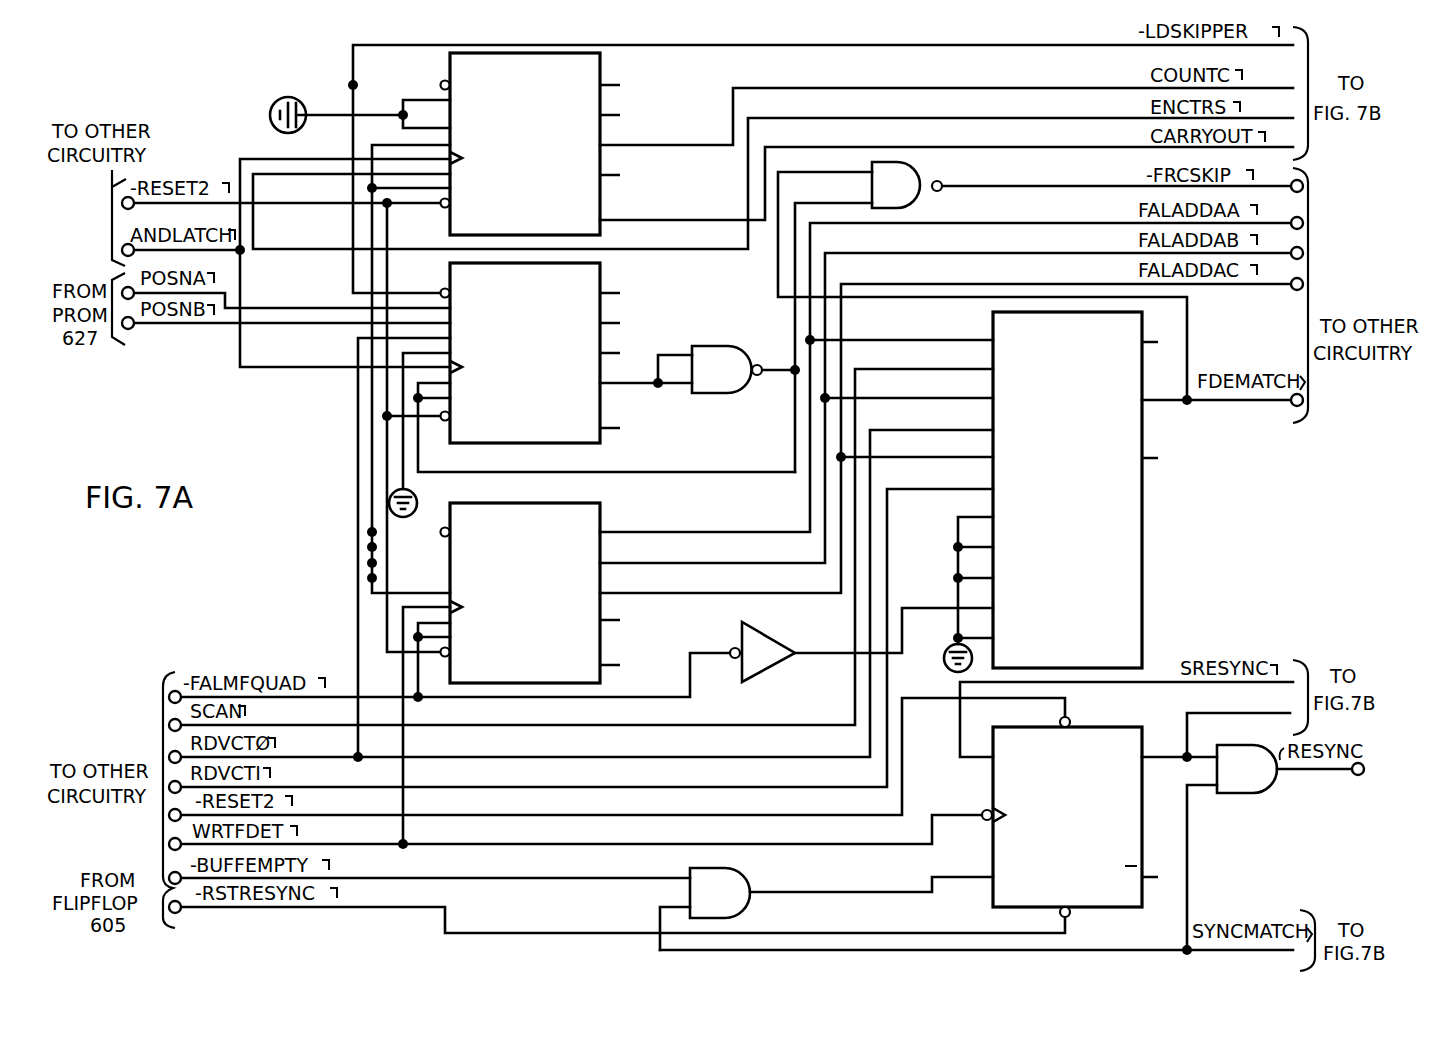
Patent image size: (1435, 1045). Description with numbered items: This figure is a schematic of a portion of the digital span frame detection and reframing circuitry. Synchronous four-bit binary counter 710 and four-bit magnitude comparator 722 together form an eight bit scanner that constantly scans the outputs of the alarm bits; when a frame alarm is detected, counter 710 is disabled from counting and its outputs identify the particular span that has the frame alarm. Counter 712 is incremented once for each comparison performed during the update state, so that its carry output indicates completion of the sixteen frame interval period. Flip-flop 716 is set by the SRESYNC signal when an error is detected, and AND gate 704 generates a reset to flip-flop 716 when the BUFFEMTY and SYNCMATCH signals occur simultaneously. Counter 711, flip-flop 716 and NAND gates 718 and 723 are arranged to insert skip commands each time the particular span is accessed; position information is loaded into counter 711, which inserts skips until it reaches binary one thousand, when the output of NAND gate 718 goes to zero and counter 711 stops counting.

The counter 712 is at (602, 237).
The counter 711 is at (598, 445).
The synchronous 4-bit binary counter 710 is at (596, 505).
The NAND gate 718 is at (724, 394).
The NAND gate 723 is at (936, 176).
The 4-bit magnitude comparator 722 is at (1144, 626).
The flip-flop 716 is at (1113, 909).
The AND gate 704 is at (741, 872).